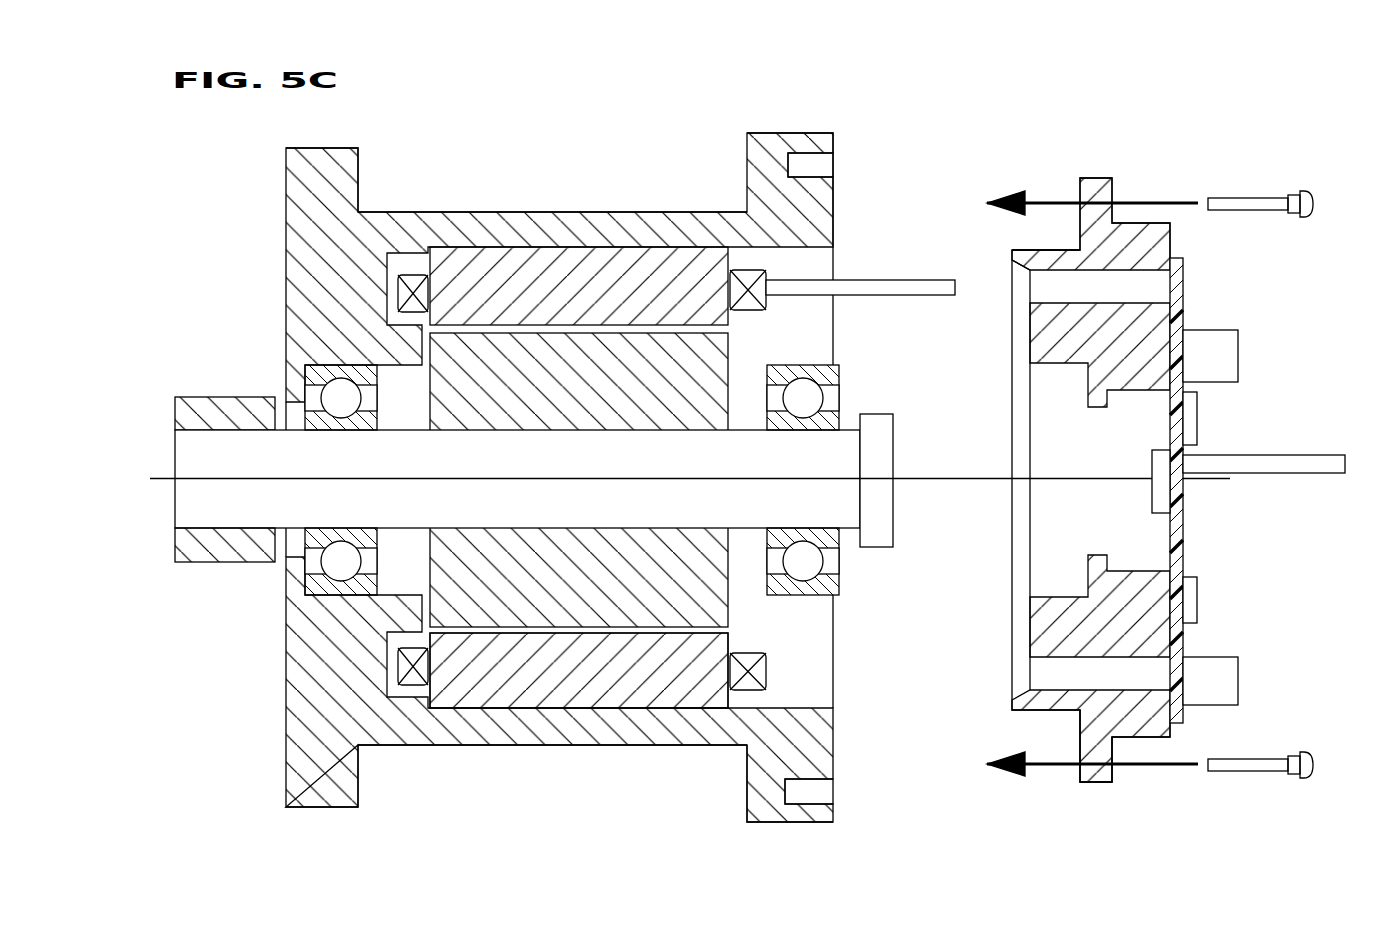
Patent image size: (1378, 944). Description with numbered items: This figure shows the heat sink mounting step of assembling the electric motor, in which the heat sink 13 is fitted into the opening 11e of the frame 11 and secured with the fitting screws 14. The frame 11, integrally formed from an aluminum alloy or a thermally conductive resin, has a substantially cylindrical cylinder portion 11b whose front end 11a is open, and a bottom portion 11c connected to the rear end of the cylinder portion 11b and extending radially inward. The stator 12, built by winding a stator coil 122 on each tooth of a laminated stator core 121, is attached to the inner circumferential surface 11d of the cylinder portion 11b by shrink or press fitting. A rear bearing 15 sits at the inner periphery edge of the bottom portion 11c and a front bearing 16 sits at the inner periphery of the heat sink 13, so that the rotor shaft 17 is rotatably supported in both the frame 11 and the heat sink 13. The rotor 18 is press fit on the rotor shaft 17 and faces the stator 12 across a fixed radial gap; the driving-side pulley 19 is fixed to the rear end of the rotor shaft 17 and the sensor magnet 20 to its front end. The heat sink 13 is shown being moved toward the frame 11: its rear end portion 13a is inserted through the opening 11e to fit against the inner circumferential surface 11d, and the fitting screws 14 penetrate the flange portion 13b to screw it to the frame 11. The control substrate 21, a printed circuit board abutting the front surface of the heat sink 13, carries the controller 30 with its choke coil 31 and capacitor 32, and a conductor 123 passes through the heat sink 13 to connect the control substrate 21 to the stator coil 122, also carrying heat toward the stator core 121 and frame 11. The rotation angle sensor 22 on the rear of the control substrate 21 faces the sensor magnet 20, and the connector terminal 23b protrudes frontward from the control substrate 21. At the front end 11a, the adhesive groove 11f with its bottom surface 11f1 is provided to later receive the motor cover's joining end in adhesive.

The frame 11 is at (685, 218).
The front end 11a is at (833, 192).
The cylinder portion 11b is at (580, 218).
The bottom portion 11c is at (293, 262).
The inner circumferential surface 11d is at (467, 697).
The opening 11e is at (753, 698).
The adhesive groove 11f is at (797, 175).
The bottom surface 11f1 is at (790, 793).
The stator 12 is at (705, 700).
The stator core 121 is at (650, 700).
The stator coil 122 is at (750, 273).
The conductor 123 is at (935, 288).
The heat sink 13 is at (1040, 327).
The rear end portion 13a is at (1022, 262).
The flange portion 13b is at (1097, 775).
The fitting screws 14 is at (1247, 205).
The rear bearing 15 is at (342, 590).
The front bearing 16 is at (815, 594).
The rotor shaft 17 is at (186, 461).
The rotor 18 is at (445, 352).
The driving-side pulley 19 is at (190, 550).
The sensor magnet 20 is at (878, 523).
The control substrate 21 is at (1177, 537).
The rotation angle sensor 22 is at (1162, 502).
The connector terminal 23b is at (1302, 458).
The controller 30 is at (1277, 288).
The choke coil 31 is at (1232, 690).
The capacitor 32 is at (1232, 357).